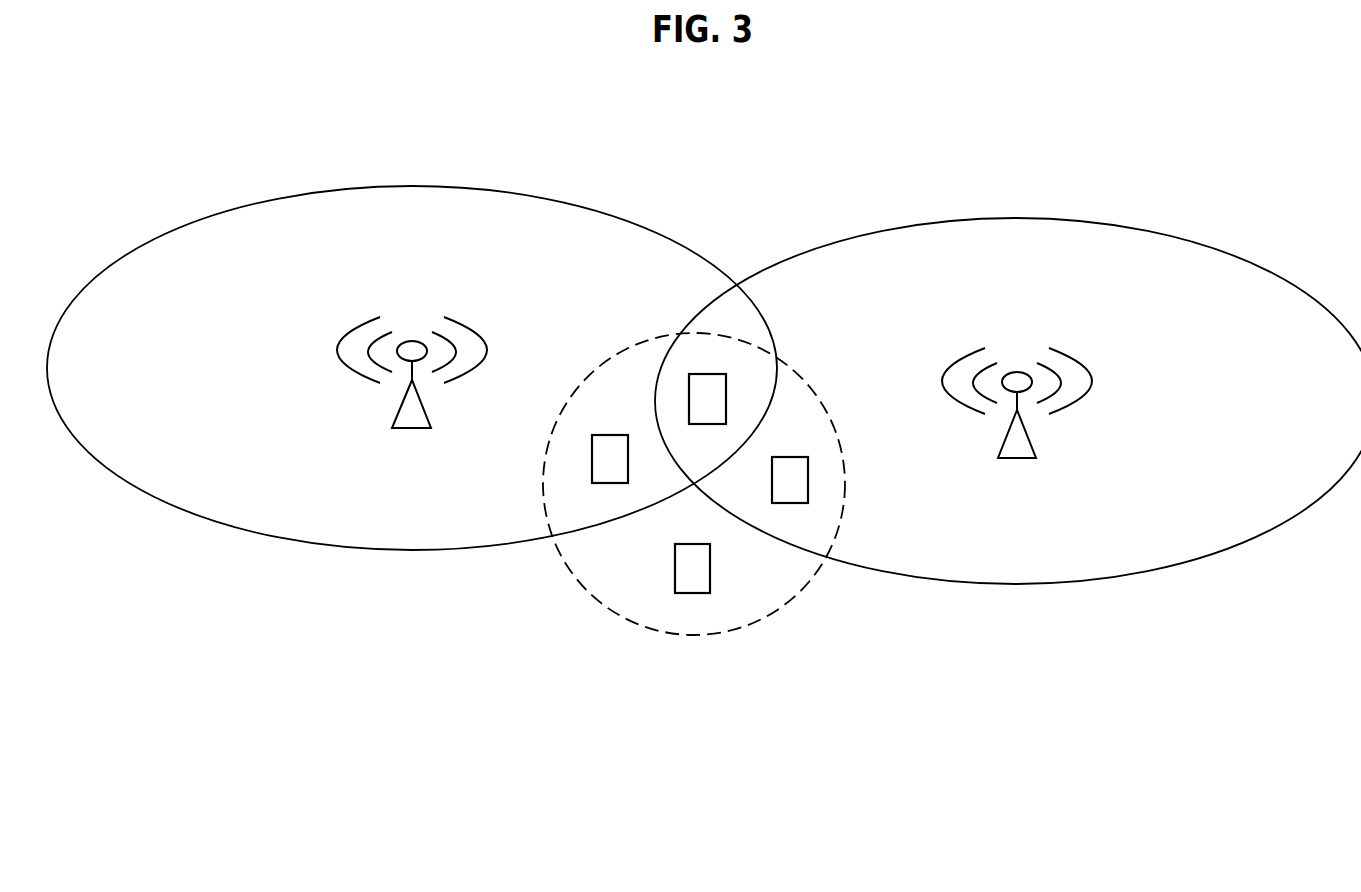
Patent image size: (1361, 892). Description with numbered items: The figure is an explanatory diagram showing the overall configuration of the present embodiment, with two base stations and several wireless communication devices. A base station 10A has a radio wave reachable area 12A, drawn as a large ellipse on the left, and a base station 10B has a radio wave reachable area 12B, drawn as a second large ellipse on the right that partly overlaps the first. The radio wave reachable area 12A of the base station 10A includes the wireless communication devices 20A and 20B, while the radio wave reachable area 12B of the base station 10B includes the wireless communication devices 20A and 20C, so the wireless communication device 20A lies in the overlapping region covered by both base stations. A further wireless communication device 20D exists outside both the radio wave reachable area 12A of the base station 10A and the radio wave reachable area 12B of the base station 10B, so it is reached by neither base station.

The radio wave reachable area 12A is at (408, 187).
The radio wave reachable area 12B is at (1013, 218).
The base station 10A is at (398, 399).
The base station 10B is at (1031, 437).
The wireless communication device 20A is at (710, 374).
The wireless communication device 20B is at (592, 458).
The wireless communication device 20C is at (808, 478).
The wireless communication device 20D is at (693, 593).